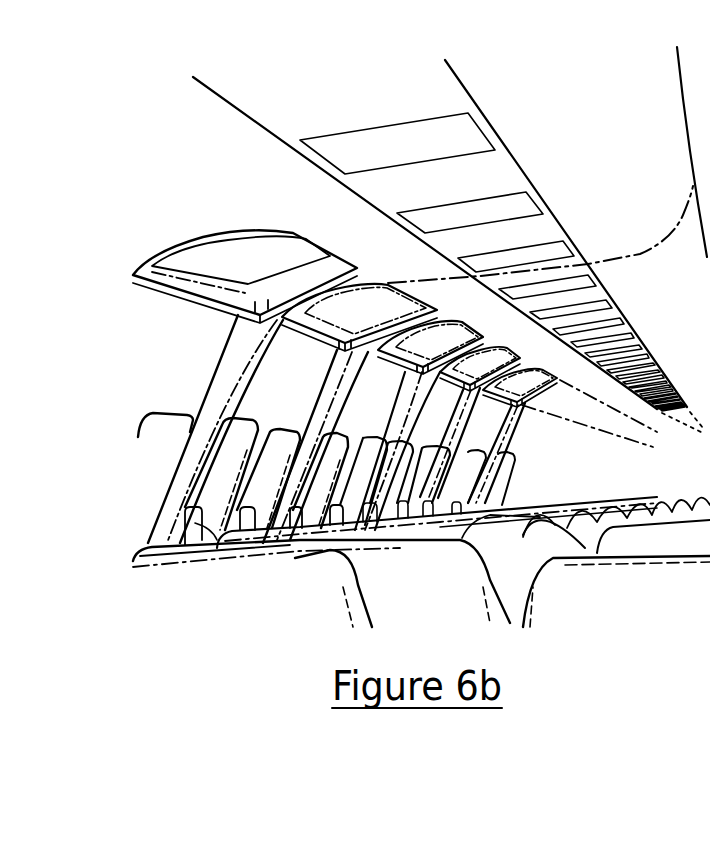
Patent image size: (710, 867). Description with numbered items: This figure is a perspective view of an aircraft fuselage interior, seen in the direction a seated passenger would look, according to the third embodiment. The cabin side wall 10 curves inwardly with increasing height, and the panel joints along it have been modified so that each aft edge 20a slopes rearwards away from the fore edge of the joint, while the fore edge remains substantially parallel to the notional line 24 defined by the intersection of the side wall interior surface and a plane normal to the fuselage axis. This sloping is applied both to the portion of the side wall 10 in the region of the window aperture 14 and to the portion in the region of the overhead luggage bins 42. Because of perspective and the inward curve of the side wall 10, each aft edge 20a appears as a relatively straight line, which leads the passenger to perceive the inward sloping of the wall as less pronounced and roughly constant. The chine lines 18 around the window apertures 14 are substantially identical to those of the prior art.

The side wall 10 is at (331, 216).
The window aperture 14 is at (217, 532).
The chine line 18 is at (341, 437).
The aft edge of panel joint 20a is at (356, 266).
The notional line 24 is at (225, 391).
The overhead luggage bin 42 is at (633, 193).